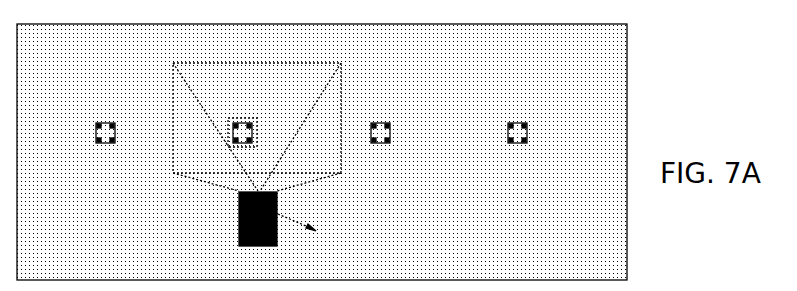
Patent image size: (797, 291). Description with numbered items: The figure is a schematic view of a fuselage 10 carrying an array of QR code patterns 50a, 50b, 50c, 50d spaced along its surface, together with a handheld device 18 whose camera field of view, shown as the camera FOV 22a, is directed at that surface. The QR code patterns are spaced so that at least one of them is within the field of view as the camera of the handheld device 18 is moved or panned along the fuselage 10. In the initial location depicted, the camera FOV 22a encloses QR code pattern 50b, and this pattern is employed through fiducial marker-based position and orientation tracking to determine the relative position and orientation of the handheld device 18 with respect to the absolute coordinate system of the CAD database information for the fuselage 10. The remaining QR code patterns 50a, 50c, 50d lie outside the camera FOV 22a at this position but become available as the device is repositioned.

The fuselage 10 is at (104, 232).
The handheld device 18 is at (239, 222).
The camera FOV 22a is at (320, 63).
The QR code pattern 50a is at (104, 123).
The QR code pattern 50b is at (258, 119).
The QR code pattern 50c is at (380, 122).
The QR code pattern 50d is at (512, 122).